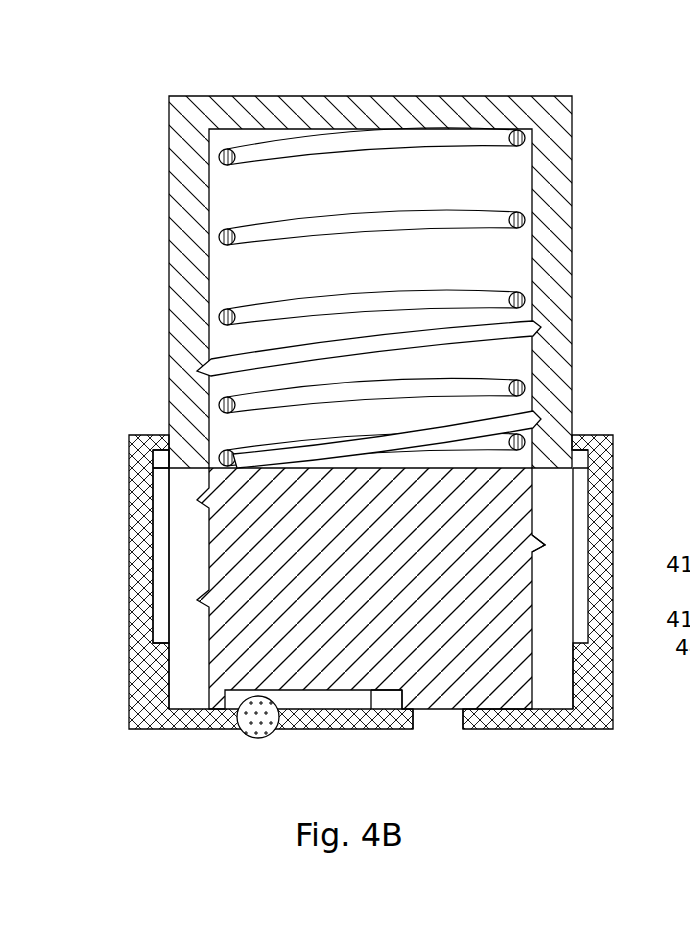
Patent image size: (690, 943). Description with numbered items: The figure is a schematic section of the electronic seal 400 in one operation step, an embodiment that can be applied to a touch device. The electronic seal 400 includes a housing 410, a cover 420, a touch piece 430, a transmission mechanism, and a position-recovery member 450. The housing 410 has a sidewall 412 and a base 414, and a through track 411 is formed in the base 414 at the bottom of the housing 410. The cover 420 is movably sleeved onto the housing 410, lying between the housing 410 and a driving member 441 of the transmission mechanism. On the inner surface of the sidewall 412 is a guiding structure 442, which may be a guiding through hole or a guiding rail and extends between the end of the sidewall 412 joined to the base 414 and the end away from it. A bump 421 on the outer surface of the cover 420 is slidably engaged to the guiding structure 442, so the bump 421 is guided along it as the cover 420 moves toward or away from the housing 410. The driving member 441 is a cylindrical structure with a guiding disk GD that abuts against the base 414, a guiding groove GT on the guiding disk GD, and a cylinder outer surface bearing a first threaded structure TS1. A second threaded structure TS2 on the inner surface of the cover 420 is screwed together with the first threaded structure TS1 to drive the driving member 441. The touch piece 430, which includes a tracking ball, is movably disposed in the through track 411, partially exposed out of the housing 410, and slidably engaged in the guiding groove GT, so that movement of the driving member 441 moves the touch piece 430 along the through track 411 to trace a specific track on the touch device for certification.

The electronic seal 400 is at (89, 52).
The housing 410 is at (140, 591).
The through track 411 is at (440, 721).
The sidewall 412 is at (132, 534).
The base 414 is at (387, 700).
The cover 420 is at (187, 233).
The bump 421 is at (160, 458).
The touch piece 430 is at (258, 737).
The driving member 441 is at (222, 677).
The guiding structure 442 is at (163, 630).
The position-recovery member 450 is at (218, 316).
The first threaded structure TS1 is at (537, 541).
The second threaded structure TS2 is at (541, 322).
The guiding groove GT is at (400, 707).
The guiding disk GD is at (513, 711).